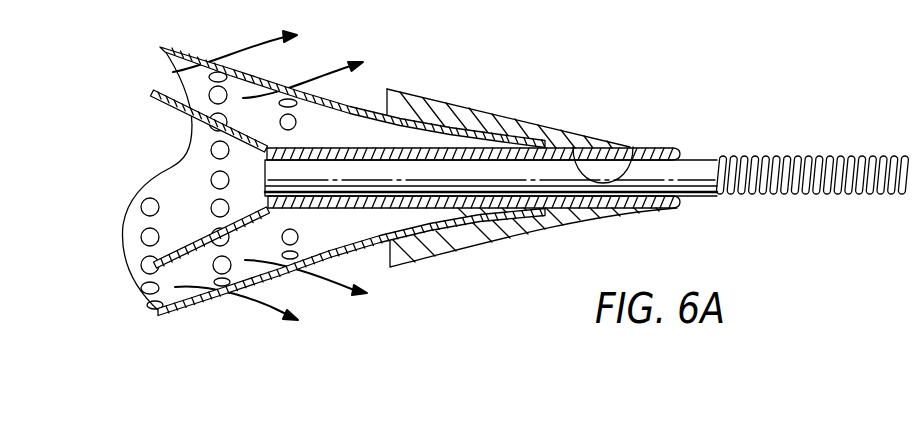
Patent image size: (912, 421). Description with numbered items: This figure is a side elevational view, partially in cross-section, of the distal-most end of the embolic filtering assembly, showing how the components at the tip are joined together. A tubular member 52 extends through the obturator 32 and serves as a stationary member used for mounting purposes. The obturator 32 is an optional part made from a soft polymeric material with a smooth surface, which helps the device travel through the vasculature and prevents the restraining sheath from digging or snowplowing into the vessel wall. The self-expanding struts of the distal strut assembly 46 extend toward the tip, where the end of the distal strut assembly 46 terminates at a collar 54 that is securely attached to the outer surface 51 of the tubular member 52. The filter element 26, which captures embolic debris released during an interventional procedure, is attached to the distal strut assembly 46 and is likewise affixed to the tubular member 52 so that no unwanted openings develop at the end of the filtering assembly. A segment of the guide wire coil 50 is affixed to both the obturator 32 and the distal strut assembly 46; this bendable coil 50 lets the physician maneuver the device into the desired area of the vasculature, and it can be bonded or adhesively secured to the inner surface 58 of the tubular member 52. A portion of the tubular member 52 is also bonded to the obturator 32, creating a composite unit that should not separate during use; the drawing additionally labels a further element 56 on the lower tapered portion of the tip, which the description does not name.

The filter element 26 is at (195, 56).
The outer surface 51 is at (296, 140).
The tubular member 52 is at (366, 148).
The obturator 32 is at (494, 117).
The inner surface 58 is at (633, 147).
The guide wire coil 50 is at (818, 170).
The distal strut assembly 46 is at (180, 113).
The collar 54 is at (346, 212).
The tapered distal support 56 is at (423, 207).